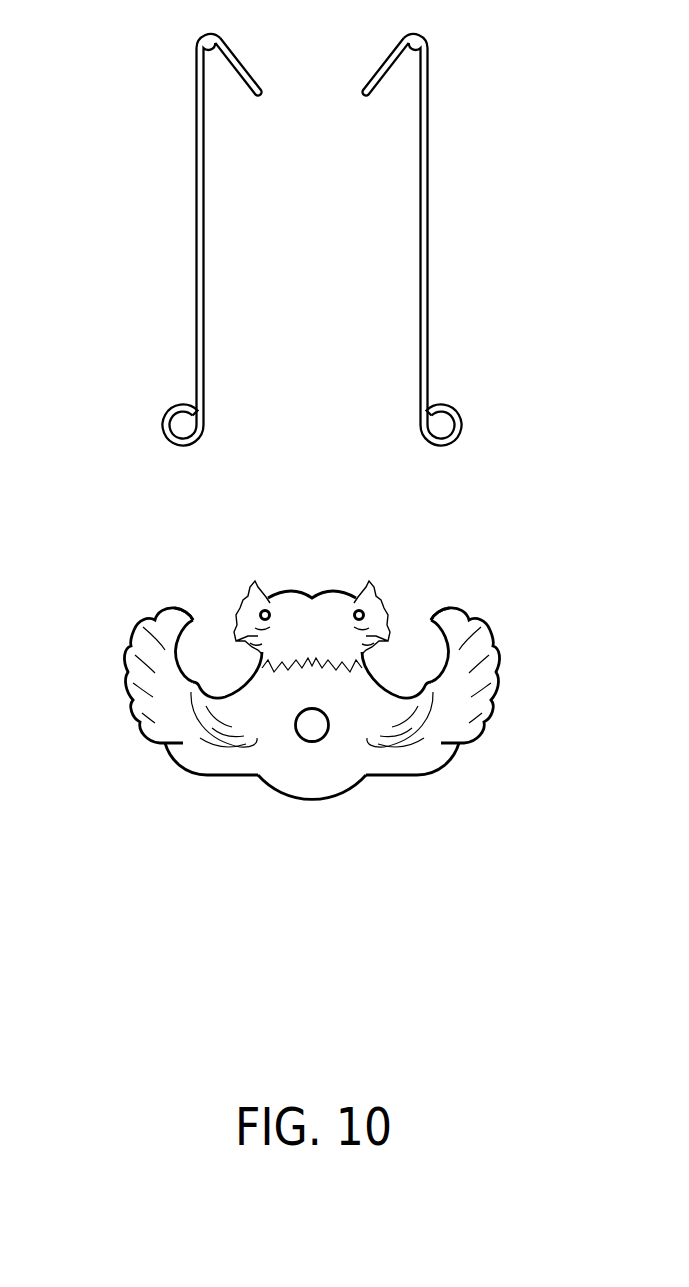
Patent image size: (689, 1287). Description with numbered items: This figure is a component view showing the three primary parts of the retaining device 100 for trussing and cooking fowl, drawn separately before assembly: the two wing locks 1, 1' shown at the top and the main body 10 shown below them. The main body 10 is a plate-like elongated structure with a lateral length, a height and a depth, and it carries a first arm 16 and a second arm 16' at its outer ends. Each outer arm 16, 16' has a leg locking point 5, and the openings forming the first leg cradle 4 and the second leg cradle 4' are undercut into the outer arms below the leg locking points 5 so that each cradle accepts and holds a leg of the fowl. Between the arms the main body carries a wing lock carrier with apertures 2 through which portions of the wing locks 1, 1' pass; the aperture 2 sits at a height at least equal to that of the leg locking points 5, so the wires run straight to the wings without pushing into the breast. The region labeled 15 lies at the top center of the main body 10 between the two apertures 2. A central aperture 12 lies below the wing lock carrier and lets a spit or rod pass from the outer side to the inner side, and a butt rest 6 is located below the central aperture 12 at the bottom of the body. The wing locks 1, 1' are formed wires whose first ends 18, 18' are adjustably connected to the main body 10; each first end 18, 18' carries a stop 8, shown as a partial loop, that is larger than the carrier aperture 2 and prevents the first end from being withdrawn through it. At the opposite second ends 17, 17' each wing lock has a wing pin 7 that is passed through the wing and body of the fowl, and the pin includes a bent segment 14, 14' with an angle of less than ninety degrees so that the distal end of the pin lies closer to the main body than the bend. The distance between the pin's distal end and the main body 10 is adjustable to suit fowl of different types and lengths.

The wing lock 1 is at (141, 239).
The wing lock 1' is at (485, 239).
The wing lock carrier aperture 2 is at (265, 604).
The first leg cradle 4 is at (159, 706).
The second leg cradle 4' is at (467, 706).
The leg locking point 5 is at (186, 610).
The butt rest 6 is at (309, 805).
The wing pin 7 is at (353, 92).
The stop 8 is at (436, 423).
The main body 10 is at (177, 776).
The central aperture 12 is at (314, 731).
The bent segment 14 is at (147, 41).
The bent segment 14' is at (478, 41).
The top center 15 is at (313, 592).
The first arm 16 is at (150, 677).
The second arm 16' is at (475, 677).
The second end 17 is at (168, 103).
The second end 17' is at (457, 103).
The first end 18 is at (139, 424).
The first end 18' is at (487, 424).
The retaining device 100 is at (122, 549).